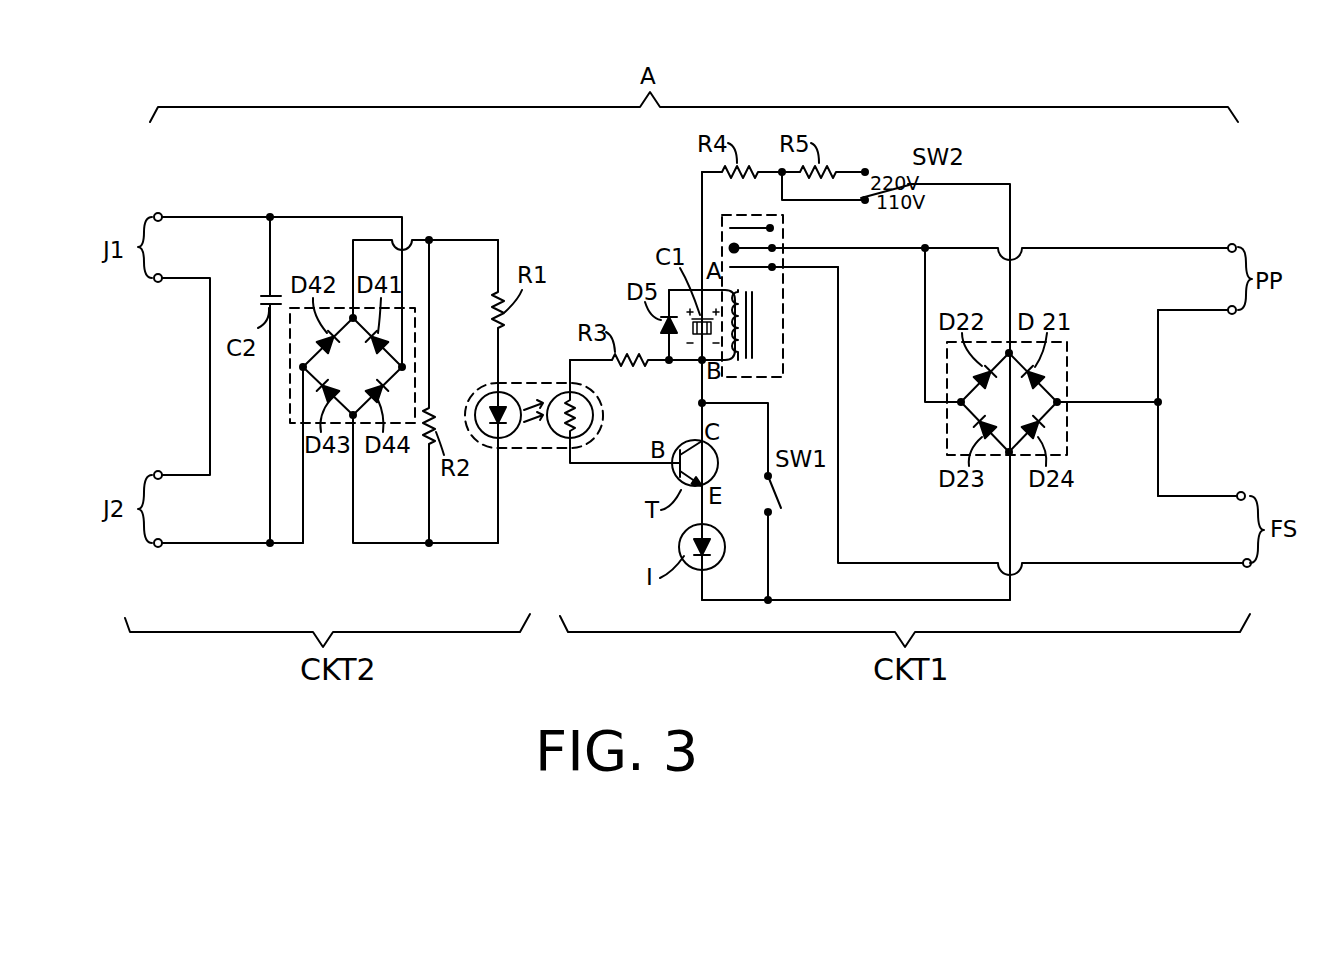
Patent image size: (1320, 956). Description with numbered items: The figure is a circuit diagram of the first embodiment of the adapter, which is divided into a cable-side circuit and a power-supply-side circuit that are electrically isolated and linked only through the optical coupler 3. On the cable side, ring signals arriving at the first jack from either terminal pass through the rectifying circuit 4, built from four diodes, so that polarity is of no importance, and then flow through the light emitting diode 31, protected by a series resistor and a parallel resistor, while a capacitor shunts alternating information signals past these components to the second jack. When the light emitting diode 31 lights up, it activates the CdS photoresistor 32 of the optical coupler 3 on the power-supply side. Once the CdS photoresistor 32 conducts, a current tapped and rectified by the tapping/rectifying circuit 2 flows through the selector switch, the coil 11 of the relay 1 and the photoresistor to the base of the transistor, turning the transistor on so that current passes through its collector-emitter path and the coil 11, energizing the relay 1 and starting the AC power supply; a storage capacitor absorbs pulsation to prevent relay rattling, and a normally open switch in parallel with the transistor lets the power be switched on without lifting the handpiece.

The relay 1 is at (722, 215).
The tapping/rectifying circuit 2 is at (947, 422).
The optical coupler 3 is at (522, 384).
The rectifying circuit 4 is at (290, 393).
The coil 11 is at (741, 357).
The LED 31 is at (505, 442).
The CdS photoresistor 32 is at (558, 442).